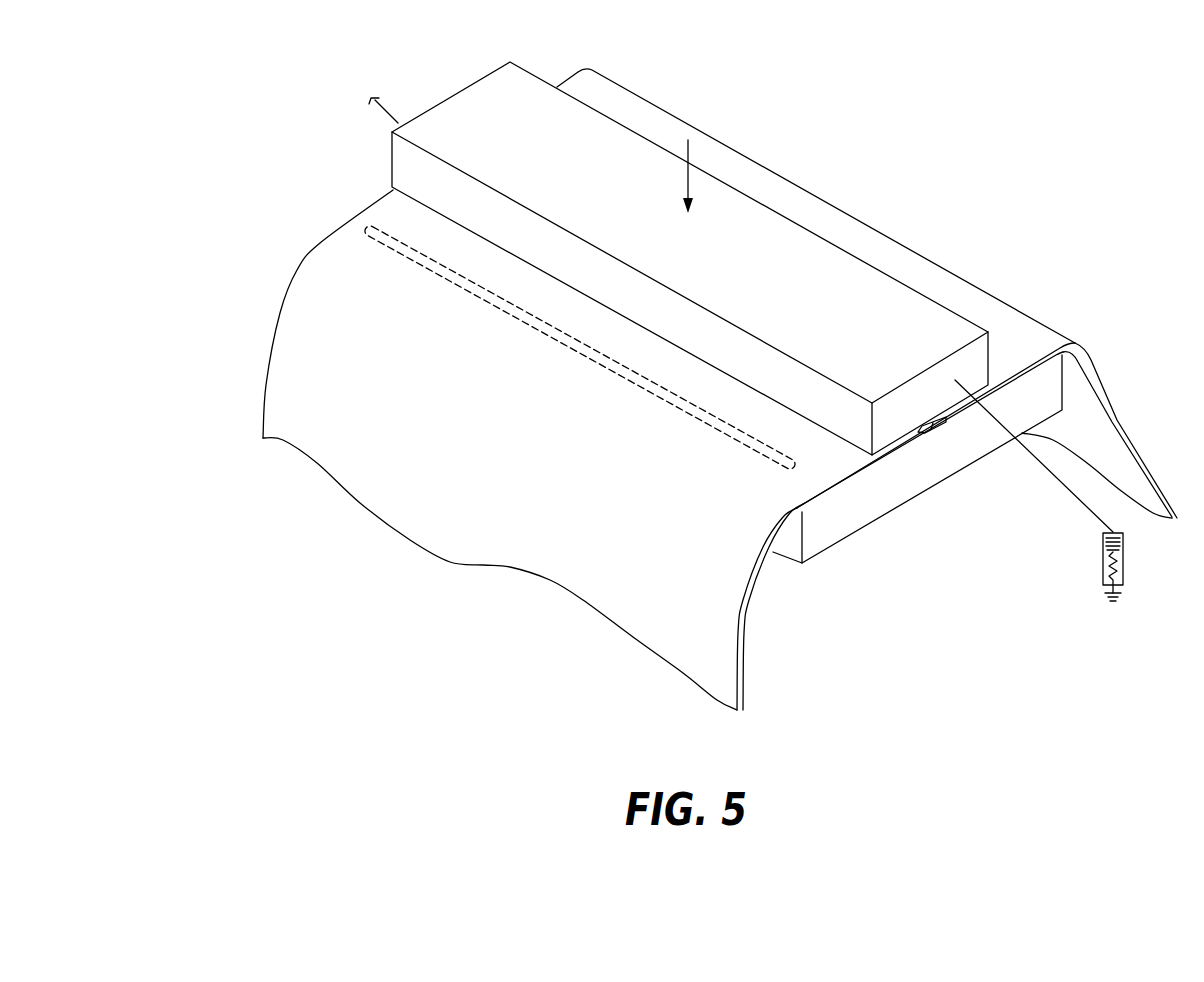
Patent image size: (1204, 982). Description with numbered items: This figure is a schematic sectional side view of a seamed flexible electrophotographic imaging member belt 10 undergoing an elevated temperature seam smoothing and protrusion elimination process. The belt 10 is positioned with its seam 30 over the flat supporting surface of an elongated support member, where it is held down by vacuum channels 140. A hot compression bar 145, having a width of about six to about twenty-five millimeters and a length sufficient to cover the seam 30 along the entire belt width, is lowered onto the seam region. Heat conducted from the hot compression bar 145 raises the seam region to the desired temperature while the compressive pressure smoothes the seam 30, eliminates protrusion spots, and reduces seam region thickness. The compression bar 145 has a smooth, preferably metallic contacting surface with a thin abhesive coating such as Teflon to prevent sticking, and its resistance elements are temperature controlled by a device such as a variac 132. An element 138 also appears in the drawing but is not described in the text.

The imaging member belt 10 is at (244, 382).
The hot compression bar 145 is at (429, 83).
The vacuum channels 140 is at (535, 325).
The housing 138 is at (943, 475).
The seam 30 is at (948, 420).
The variac 132 is at (1127, 562).